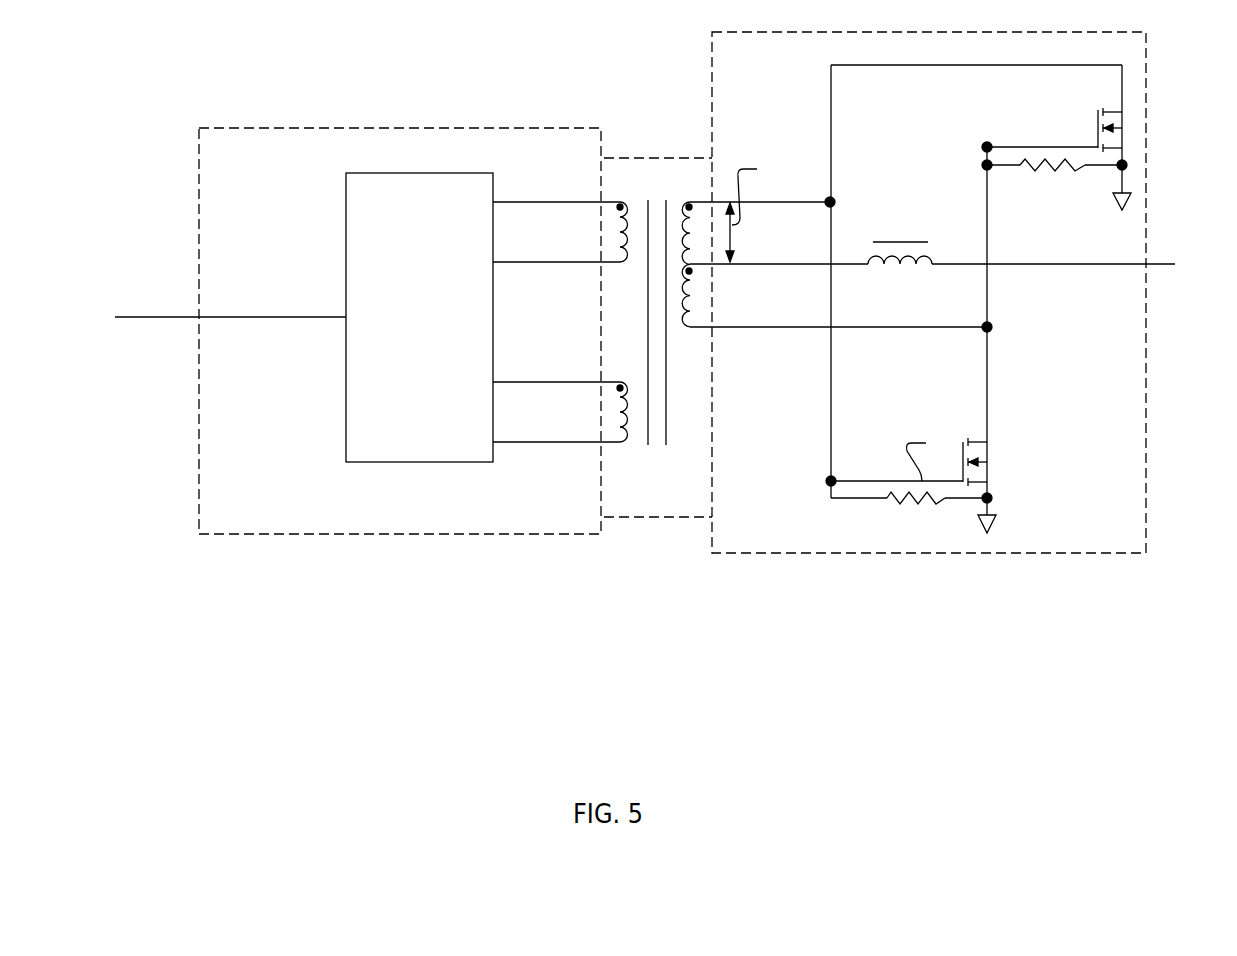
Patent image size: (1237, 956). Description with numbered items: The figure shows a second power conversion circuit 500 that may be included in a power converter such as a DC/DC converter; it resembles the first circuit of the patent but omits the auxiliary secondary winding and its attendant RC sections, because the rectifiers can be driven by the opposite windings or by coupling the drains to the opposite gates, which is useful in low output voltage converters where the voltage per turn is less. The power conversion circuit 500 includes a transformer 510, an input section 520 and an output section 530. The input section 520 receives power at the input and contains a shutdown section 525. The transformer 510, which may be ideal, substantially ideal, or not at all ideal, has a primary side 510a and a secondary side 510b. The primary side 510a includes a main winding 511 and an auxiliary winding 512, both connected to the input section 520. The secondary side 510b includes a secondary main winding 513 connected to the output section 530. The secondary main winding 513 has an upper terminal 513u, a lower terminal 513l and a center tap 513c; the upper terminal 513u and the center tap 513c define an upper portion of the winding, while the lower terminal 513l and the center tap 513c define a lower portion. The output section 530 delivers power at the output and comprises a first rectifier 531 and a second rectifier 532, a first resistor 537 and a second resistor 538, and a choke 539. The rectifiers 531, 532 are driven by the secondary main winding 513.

The power conversion circuit 500 is at (605, 57).
The transformer 510 is at (657, 518).
The primary side 510a is at (615, 505).
The secondary side 510b is at (693, 505).
The main winding 511 is at (620, 201).
The auxiliary winding 512 is at (621, 444).
The secondary main winding 513 is at (688, 201).
The upper terminal 513u is at (698, 201).
The center tap 513c is at (692, 271).
The lower terminal 513l is at (690, 326).
The input section 520 is at (310, 535).
The shutdown section 525 is at (419, 317).
The output section 530 is at (927, 553).
The first rectifier 531 is at (983, 442).
The second rectifier 532 is at (1118, 110).
The first resistor 537 is at (948, 499).
The second resistor 538 is at (1036, 166).
The choke 539 is at (878, 266).